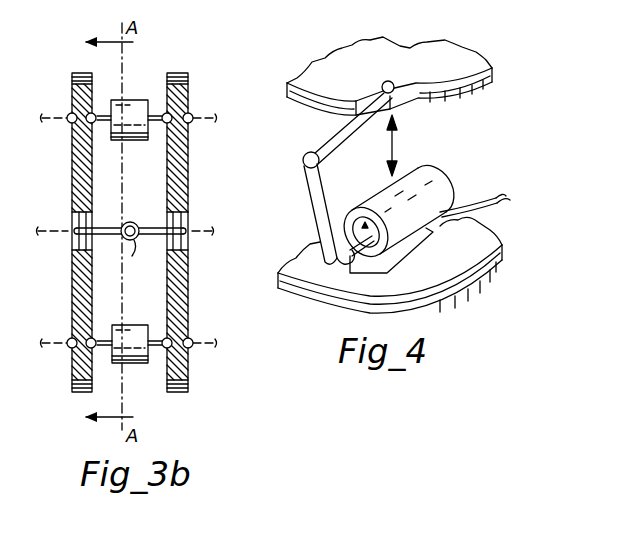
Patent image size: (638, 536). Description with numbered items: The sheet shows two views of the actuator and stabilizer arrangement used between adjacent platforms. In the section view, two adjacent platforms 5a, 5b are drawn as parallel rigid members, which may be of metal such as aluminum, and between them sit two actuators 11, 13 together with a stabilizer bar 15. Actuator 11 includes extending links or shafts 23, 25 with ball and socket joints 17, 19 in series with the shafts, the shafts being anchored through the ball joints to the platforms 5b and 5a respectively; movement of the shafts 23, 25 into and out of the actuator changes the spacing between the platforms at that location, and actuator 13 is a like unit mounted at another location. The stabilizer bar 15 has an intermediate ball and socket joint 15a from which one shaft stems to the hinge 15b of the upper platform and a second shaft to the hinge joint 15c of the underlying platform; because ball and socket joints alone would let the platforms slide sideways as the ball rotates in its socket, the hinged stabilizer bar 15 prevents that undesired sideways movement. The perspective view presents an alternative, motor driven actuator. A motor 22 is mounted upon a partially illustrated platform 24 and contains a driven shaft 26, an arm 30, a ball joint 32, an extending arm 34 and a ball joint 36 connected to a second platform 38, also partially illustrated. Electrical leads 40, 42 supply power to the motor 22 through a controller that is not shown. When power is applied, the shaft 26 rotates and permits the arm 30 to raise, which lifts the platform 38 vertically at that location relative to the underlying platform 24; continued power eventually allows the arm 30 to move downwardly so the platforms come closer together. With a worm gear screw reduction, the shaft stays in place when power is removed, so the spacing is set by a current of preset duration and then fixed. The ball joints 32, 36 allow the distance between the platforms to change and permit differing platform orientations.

In FIG. 3B, the platform 5a is at (188, 78).
In FIG. 3B, the platform 5b is at (72, 77).
In FIG. 3B, the actuator 11 is at (137, 310).
In FIG. 3B, the actuator 13 is at (128, 100).
In FIG. 3B, the stabilizer bar 15 is at (109, 242).
In FIG. 3B, the intermediate ball and socket joint 15a is at (134, 256).
In FIG. 3B, the hinge 15b is at (167, 228).
In FIG. 3B, the hinge joint 15c is at (83, 228).
In FIG. 3B, the ball and socket joint 17 is at (98, 124).
In FIG. 3B, the ball and socket joint 19 is at (162, 124).
In FIG. 3B, the shaft 23 is at (96, 112).
In FIG. 3B, the shaft 25 is at (162, 112).
In FIG. 4, the motor 22 is at (420, 198).
In FIG. 4, the platform 24 is at (470, 256).
In FIG. 4, the driven shaft 26 is at (333, 262).
In FIG. 4, the arm 30 is at (330, 188).
In FIG. 4, the ball joint 32 is at (303, 162).
In FIG. 4, the extending arm 34 is at (345, 127).
In FIG. 4, the ball joint 36 is at (398, 80).
In FIG. 4, the second platform 38 is at (446, 56).
In FIG. 4, the electrical lead 40 is at (494, 188).
In FIG. 4, the electrical lead 42 is at (504, 200).